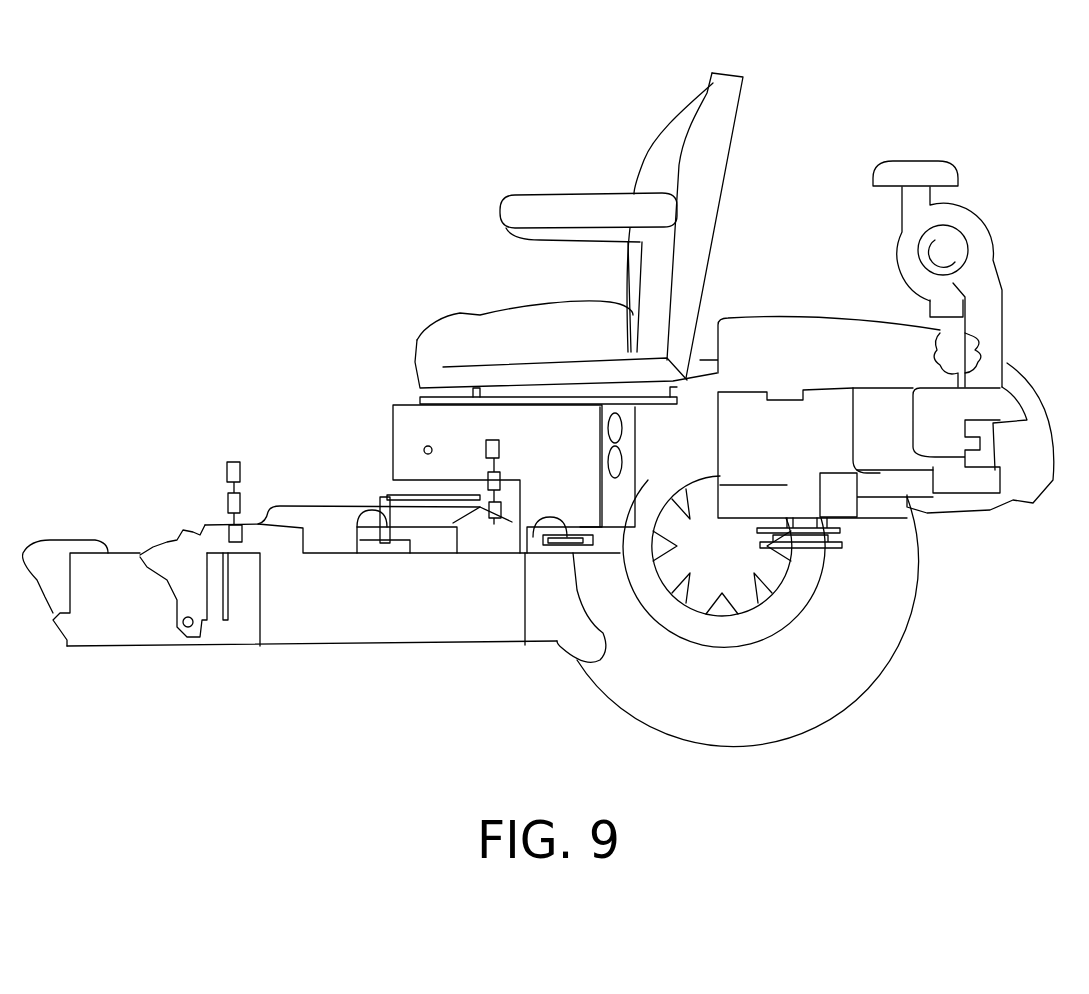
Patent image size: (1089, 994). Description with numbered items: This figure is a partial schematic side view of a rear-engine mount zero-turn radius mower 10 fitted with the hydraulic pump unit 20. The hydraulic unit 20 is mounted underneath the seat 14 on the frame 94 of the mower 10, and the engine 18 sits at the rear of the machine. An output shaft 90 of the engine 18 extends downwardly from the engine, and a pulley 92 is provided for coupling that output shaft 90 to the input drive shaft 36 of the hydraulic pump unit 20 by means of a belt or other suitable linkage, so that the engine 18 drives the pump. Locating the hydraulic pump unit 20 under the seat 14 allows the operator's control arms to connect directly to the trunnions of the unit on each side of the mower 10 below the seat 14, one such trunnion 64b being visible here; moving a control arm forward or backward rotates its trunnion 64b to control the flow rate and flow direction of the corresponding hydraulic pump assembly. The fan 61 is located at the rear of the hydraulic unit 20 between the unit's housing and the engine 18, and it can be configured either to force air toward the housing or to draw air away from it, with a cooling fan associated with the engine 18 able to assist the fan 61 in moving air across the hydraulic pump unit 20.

The zero-turn radius mower 10 is at (261, 296).
The seat 14 is at (740, 75).
The engine 18 is at (983, 200).
The hydraulic pump unit 20 is at (380, 403).
The input drive shaft 36 is at (533, 527).
The fan 61 is at (623, 417).
The trunnion 64b is at (408, 450).
The output shaft 90 is at (872, 648).
The pulley 92 is at (807, 562).
The frame 94 is at (848, 330).